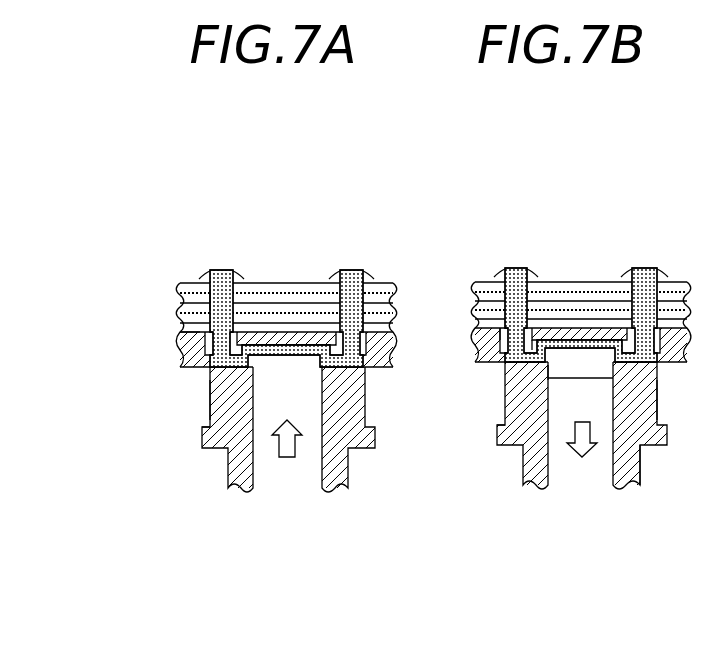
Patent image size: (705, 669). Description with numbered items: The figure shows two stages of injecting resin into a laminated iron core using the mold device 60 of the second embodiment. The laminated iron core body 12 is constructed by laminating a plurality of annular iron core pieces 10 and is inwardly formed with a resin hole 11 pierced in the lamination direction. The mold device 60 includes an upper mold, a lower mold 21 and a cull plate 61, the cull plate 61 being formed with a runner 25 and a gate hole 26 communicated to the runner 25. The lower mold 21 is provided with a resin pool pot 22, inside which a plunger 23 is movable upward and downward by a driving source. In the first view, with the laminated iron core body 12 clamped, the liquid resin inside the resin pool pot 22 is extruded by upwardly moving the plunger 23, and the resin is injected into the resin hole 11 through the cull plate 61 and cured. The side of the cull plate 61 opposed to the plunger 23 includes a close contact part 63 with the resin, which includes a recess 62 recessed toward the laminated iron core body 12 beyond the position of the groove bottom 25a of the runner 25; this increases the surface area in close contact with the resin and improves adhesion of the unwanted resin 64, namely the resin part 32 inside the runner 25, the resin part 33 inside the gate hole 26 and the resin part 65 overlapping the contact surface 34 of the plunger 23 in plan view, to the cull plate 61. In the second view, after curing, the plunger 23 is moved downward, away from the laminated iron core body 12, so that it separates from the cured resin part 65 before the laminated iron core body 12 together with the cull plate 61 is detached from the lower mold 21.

In FIG. 7A, the annular iron core pieces 10 is at (274, 310).
In FIG. 7B, the annular iron core pieces 10 is at (568, 310).
In FIG. 7A, the resin hole 11 is at (353, 270).
In FIG. 7B, the resin hole 11 is at (647, 268).
In FIG. 7A, the laminated iron core body 12 is at (316, 232).
In FIG. 7B, the laminated iron core body 12 is at (608, 232).
In FIG. 7A, the lower mold 21 is at (208, 512).
In FIG. 7B, the lower mold 21 is at (503, 512).
In FIG. 7A, the resin pool pot 22 is at (220, 440).
In FIG. 7B, the resin pool pot 22 is at (514, 437).
In FIG. 7A, the plunger 23 is at (287, 486).
In FIG. 7B, the plunger 23 is at (582, 477).
In FIG. 7A, the runner 25 is at (205, 300).
In FIG. 7A, the groove bottom 25a is at (210, 400).
In FIG. 7A, the gate hole 26 is at (176, 331).
In FIG. 7B, the resin part 32 is at (511, 328).
In FIG. 7B, the resin part 33 is at (532, 347).
In FIG. 7A, the contact surface 34 is at (212, 427).
In FIG. 7B, the contact surface 34 is at (545, 372).
In FIG. 7A, the mold device 60 is at (188, 558).
In FIG. 7B, the mold device 60 is at (485, 558).
In FIG. 7A, the cull plate 61 is at (200, 350).
In FIG. 7B, the cull plate 61 is at (497, 350).
In FIG. 7B, the recess 62 is at (600, 352).
In FIG. 7B, the close contact part 63 is at (640, 465).
In FIG. 7B, the unwanted resin 64 is at (507, 418).
In FIG. 7B, the resin part 65 is at (502, 325).